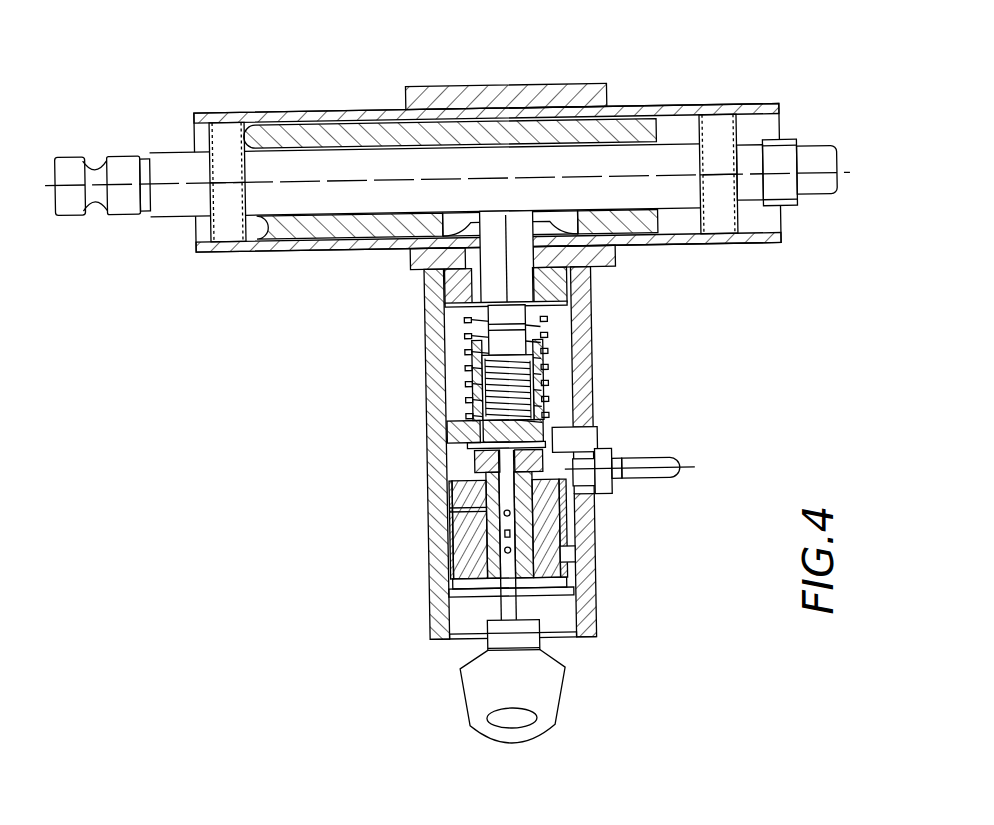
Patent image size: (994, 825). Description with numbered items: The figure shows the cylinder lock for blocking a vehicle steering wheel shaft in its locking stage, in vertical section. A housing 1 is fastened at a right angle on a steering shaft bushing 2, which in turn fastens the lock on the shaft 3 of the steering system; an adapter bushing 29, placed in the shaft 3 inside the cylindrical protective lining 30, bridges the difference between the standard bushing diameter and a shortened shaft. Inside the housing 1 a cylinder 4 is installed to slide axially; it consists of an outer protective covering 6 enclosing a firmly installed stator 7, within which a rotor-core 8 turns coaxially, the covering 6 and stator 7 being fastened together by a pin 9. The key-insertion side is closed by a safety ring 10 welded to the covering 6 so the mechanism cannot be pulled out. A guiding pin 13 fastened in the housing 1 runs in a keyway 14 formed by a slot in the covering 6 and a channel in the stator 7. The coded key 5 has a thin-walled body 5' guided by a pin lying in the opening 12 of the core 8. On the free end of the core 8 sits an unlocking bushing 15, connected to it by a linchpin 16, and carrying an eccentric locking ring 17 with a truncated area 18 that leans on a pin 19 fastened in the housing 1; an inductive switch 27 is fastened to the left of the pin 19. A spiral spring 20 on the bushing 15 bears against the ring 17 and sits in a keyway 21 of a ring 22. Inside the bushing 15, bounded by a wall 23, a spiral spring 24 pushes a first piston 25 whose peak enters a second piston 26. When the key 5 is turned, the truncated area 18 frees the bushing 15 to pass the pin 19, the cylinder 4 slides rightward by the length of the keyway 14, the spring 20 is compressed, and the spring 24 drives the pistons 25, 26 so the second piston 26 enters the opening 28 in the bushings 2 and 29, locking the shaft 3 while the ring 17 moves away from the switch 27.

The housing 1 is at (595, 638).
The steering shaft bushing 2 is at (505, 67).
The shaft 3 is at (107, 113).
The cylinder 4 is at (467, 530).
The coded key 5 is at (480, 699).
The key body 5' is at (455, 662).
The outer protective covering 6 is at (452, 592).
The housing-stator 7 is at (455, 583).
The cylinder rotor-core 8 is at (580, 533).
The pin 9 is at (452, 513).
The safety ring 10 is at (585, 605).
The opening of the core 12 is at (540, 637).
The guiding pin 13 is at (590, 563).
The keyway 14 is at (565, 512).
The unlocking bushing 15 is at (545, 388).
The linchpin 16 is at (485, 468).
The eccentric locking ring 17 is at (470, 445).
The truncated area 18 is at (575, 405).
The pin 19 is at (580, 438).
The spiral spring 20 is at (585, 310).
The keyway 21 is at (447, 322).
The ring 22 is at (447, 282).
The wall 23 is at (585, 330).
The spiral spring 24 is at (478, 388).
The first piston 25 is at (467, 355).
The second piston 26 is at (520, 186).
The inductive switch 27 is at (650, 500).
The opening 28 is at (544, 123).
The adapter bushing 29 is at (451, 125).
The cylindrical protective lining 30 is at (487, 132).